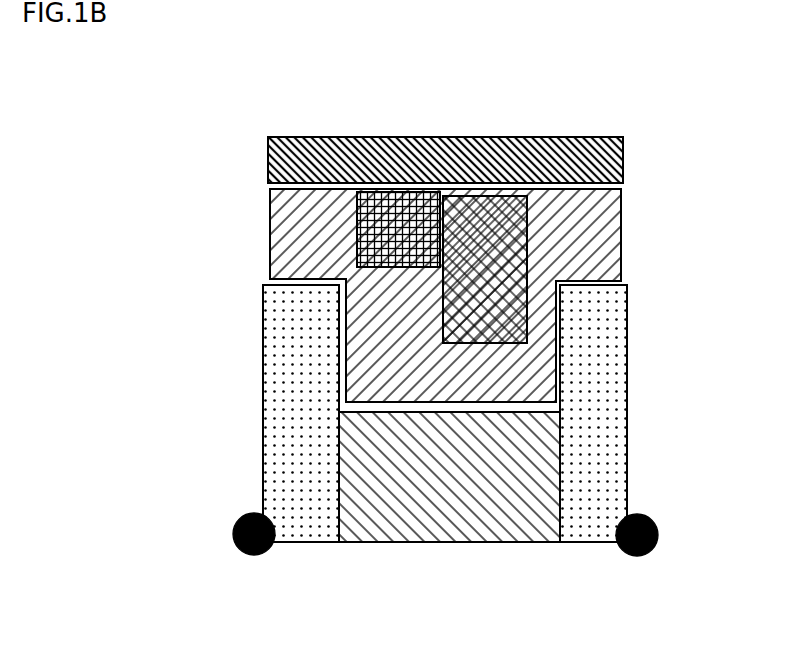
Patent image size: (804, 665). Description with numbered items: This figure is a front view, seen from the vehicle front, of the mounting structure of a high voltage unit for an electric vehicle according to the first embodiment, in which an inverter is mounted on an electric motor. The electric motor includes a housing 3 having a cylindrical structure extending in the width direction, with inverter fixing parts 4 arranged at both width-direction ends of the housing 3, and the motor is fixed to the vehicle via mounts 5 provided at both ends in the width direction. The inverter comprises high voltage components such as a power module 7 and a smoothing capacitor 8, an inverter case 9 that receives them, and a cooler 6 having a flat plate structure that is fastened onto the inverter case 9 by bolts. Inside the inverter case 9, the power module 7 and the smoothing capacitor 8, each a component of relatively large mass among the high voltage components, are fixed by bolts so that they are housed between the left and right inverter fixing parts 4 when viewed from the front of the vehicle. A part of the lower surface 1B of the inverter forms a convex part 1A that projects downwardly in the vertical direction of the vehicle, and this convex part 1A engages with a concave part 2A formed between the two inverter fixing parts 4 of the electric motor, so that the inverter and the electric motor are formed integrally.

The convex part 1A is at (527, 355).
The lower surface 1B is at (530, 405).
The concave part 2A is at (438, 405).
The housing 3 is at (502, 513).
The inverter fixing parts 4 is at (275, 313).
The mounts 5 is at (247, 555).
The cooler 6 is at (307, 165).
The power module 7 is at (396, 215).
The smoothing capacitor 8 is at (485, 235).
The inverter case 9 is at (275, 212).